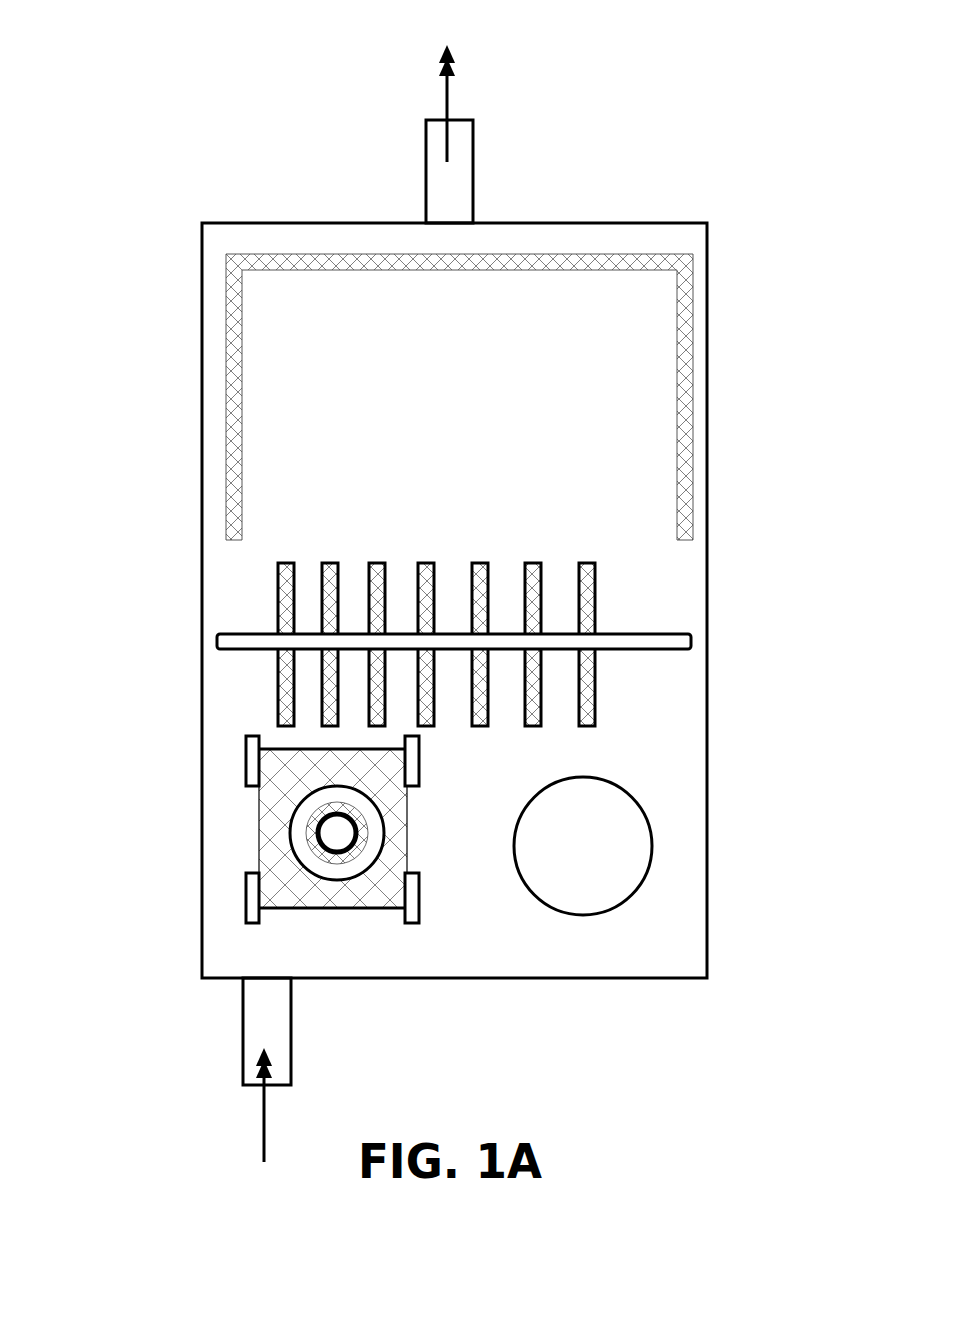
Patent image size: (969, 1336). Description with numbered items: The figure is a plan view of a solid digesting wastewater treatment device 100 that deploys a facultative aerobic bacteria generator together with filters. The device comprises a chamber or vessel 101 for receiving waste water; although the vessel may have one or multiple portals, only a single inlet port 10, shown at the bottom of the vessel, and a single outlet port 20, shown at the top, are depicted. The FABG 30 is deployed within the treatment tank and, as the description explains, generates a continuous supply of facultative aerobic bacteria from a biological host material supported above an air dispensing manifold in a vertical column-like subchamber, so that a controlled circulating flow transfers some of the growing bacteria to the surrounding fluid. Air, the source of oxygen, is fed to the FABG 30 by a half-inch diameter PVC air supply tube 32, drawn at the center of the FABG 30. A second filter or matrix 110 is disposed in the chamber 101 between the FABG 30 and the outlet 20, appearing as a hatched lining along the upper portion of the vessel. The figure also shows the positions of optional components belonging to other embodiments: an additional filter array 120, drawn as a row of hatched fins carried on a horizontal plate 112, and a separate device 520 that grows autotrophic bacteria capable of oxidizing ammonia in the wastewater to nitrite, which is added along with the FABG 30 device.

The wastewater treatment device 100 is at (660, 176).
The chamber or vessel 101 is at (707, 602).
The outlet port 20 is at (417, 208).
The inlet port 10 is at (235, 1070).
The second filter or matrix 110 is at (225, 397).
The support plate 112 is at (250, 640).
The additional filter array 120 is at (623, 676).
The FABG 30 is at (239, 836).
The PVC air supply tube 32 is at (318, 828).
The separate device that grows autotrophic bacteria 520 is at (633, 880).